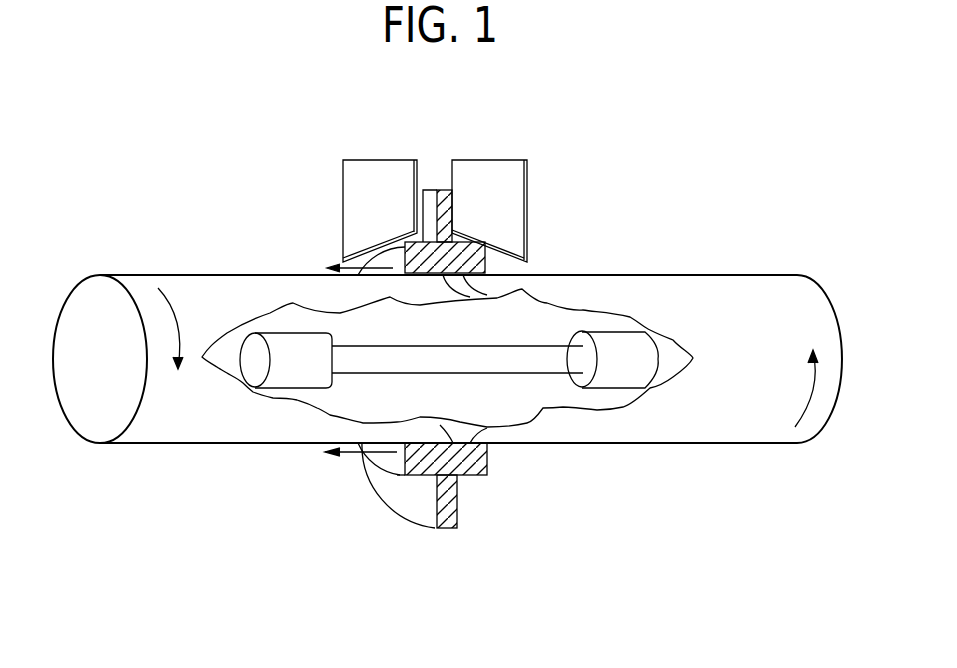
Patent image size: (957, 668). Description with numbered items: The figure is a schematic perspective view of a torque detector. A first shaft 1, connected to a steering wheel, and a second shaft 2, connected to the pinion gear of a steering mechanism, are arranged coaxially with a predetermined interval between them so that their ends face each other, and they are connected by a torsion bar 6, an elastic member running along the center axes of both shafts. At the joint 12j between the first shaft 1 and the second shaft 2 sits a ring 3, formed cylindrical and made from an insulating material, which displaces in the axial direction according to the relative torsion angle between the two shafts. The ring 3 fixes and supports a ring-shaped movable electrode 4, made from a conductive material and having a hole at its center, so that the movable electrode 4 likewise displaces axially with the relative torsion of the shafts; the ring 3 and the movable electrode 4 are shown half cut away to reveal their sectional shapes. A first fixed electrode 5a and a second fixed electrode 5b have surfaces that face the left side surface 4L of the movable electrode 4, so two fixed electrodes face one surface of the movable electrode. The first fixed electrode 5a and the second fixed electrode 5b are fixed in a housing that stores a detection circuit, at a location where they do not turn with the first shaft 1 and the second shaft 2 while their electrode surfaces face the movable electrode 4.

The first shaft 1 is at (211, 278).
The second shaft 2 is at (730, 273).
The ring 3 is at (480, 462).
The movable electrode 4 is at (447, 506).
The left side surface 4L is at (448, 188).
The first fixed electrode 5a is at (388, 168).
The second fixed electrode 5b is at (488, 168).
The torsion bar 6 is at (547, 353).
The joint 12j is at (473, 432).